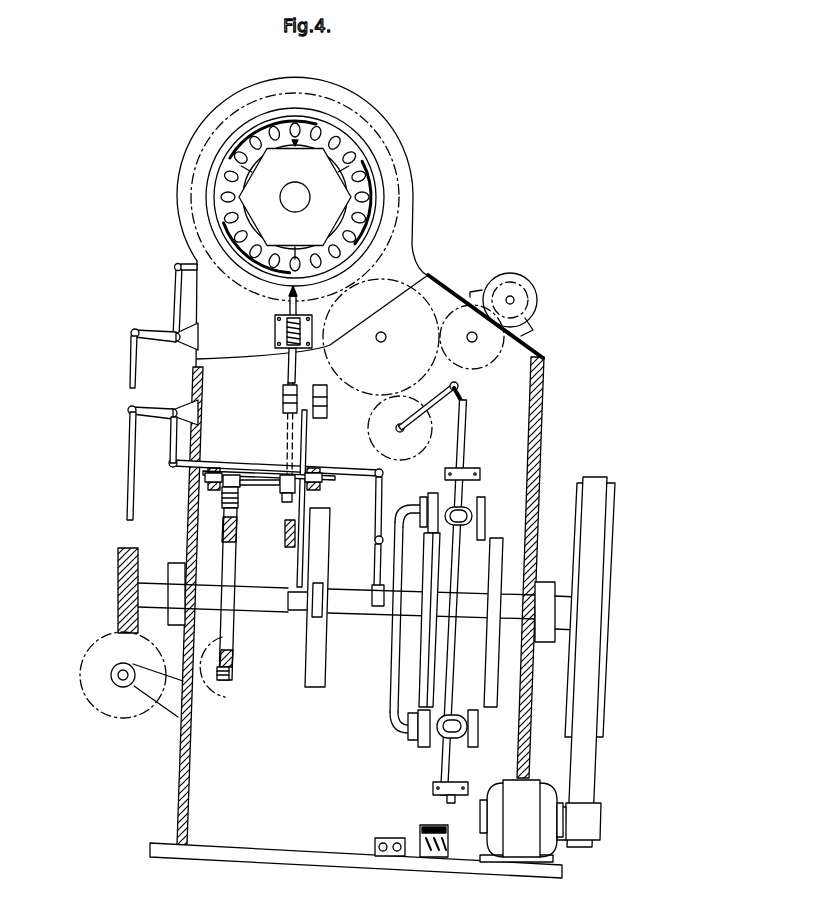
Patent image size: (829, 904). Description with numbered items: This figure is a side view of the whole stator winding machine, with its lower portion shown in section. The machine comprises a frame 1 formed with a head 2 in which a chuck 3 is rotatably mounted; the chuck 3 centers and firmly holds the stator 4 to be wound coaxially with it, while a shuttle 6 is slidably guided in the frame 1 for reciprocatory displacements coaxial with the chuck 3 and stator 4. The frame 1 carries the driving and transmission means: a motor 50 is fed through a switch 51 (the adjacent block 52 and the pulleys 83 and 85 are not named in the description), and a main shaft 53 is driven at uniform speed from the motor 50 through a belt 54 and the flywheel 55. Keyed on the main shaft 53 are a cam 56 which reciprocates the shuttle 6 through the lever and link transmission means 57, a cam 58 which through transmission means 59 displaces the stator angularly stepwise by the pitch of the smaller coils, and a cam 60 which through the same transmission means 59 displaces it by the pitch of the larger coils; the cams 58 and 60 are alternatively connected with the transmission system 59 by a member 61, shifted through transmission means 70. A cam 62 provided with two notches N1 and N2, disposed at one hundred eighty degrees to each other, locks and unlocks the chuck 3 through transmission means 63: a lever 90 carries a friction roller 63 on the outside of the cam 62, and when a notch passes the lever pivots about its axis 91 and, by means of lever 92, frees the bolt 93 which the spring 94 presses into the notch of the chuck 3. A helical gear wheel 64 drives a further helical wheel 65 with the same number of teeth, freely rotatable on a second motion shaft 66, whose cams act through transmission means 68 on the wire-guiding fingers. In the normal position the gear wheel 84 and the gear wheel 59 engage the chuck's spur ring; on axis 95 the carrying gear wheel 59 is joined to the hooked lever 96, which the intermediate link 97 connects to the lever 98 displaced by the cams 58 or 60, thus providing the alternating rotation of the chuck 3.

The frame 1 is at (183, 755).
The head 2 is at (372, 118).
The chuck 3 is at (372, 152).
The stator 4 is at (340, 132).
The shuttle 6 is at (295, 199).
The motor 50 is at (521, 821).
The switch 51 is at (438, 859).
The terminal block 52 is at (390, 858).
The main shaft 53 is at (548, 584).
The belt 54 is at (600, 547).
The flywheel 55 is at (577, 518).
The cam 56 is at (315, 688).
The transmission means 57 is at (298, 553).
The cam 58 is at (423, 683).
The transmission means 59 is at (422, 457).
The cam 60 is at (492, 708).
The member 61 is at (390, 714).
The cam 62 is at (214, 688).
The friction roller 63 is at (233, 513).
The helical gear wheel 64 is at (120, 568).
The helical wheel 65 is at (87, 652).
The second motion shaft 66 is at (122, 680).
The transmission means 68 is at (176, 302).
The transmission means 70 is at (172, 443).
The idler pulley 83 is at (528, 288).
The gear wheel 84 is at (400, 279).
The pulley 85 is at (487, 365).
The lever 90 is at (230, 478).
The axis 91 is at (280, 485).
The lever 92 is at (283, 480).
The bolt 93 is at (290, 298).
The spring 94 is at (275, 328).
The axis 95 is at (378, 440).
The hooked lever 96 is at (437, 397).
The intermediate link 97 is at (466, 404).
The lever 98 is at (466, 435).
The notch N1 is at (233, 520).
The notch N2 is at (229, 670).